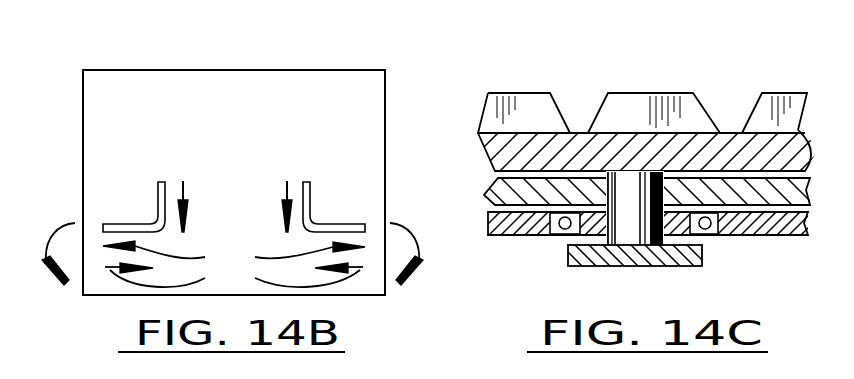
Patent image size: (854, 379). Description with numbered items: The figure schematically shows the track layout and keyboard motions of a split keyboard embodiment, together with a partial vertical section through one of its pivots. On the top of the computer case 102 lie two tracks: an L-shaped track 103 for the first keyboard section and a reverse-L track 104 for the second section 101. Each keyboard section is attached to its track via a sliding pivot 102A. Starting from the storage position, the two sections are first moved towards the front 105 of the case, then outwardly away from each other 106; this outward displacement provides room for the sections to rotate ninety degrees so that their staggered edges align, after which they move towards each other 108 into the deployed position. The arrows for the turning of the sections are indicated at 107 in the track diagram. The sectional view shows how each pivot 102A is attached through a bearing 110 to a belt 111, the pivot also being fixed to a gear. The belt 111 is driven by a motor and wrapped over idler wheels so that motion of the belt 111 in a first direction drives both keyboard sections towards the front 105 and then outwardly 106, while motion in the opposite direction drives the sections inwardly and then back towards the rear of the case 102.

In FIG. 14C, the second section 101 is at (633, 150).
In FIG. 14B, the computer case 102 is at (293, 77).
In FIG. 14C, the sliding pivot 102A is at (625, 220).
In FIG. 14B, the L-shaped track 103 is at (305, 183).
In FIG. 14B, the reverse-L track 104 is at (160, 185).
In FIG. 14C, the reverse-L track 104 is at (502, 192).
In FIG. 14B, the motion towards the front 105 is at (287, 195).
In FIG. 14B, the motion outwardly away from each other 106 is at (234, 252).
In FIG. 14B, the light exit direction 107 is at (53, 232).
In FIG. 14B, the motion towards each other 108 is at (234, 275).
In FIG. 14C, the bearing 110 is at (673, 223).
In FIG. 14C, the belt 111 is at (751, 218).